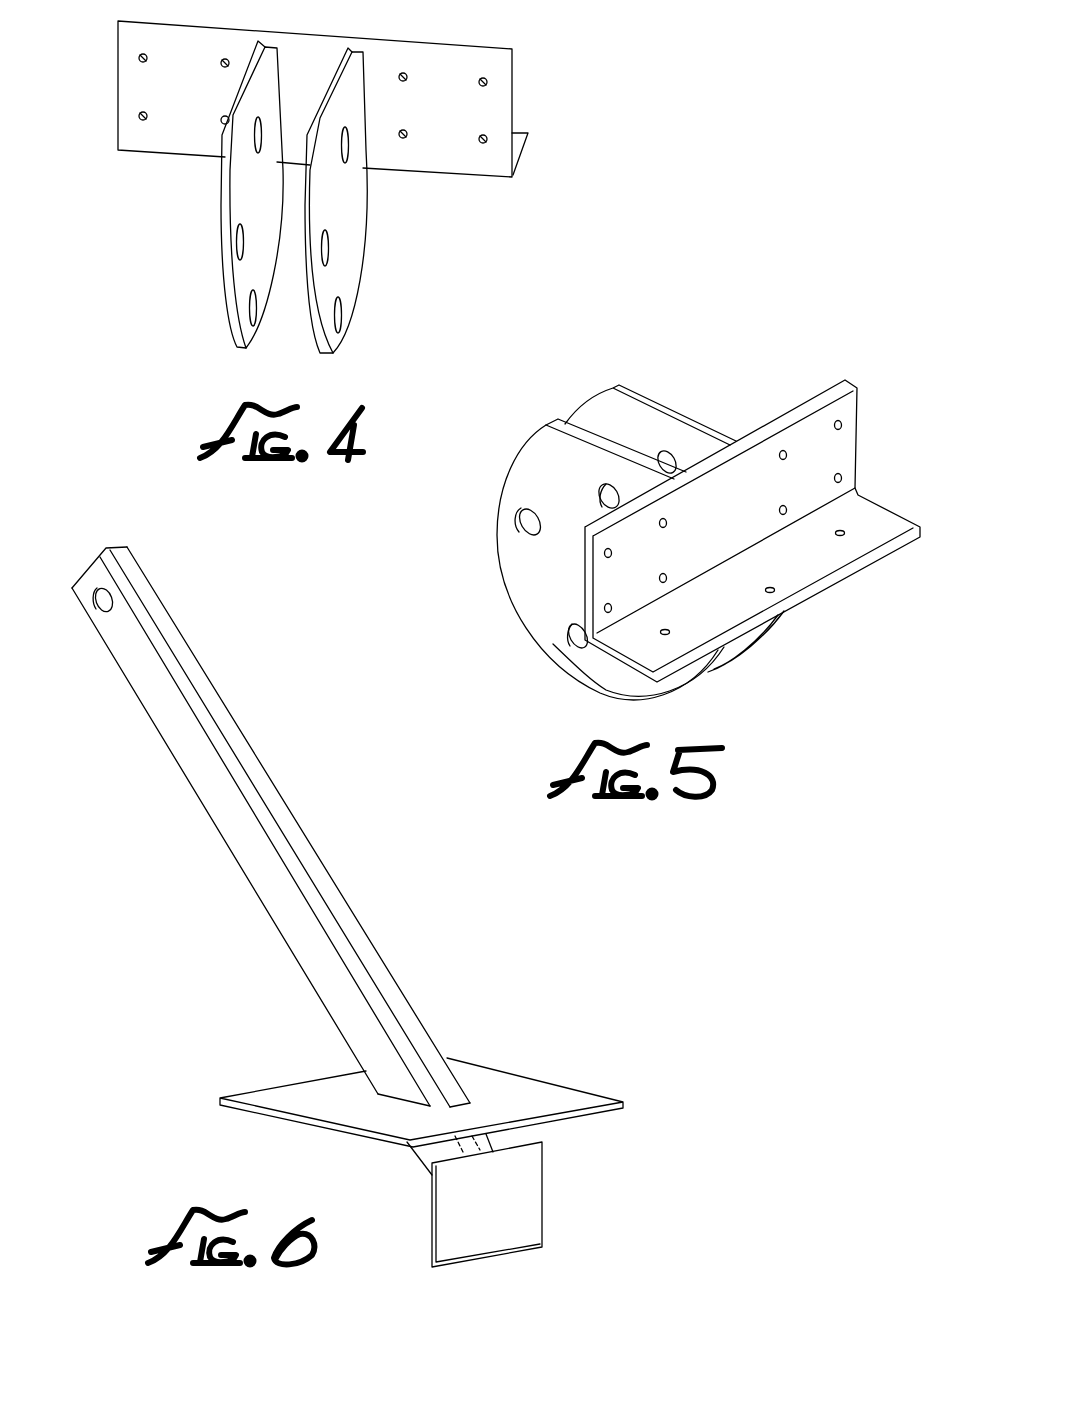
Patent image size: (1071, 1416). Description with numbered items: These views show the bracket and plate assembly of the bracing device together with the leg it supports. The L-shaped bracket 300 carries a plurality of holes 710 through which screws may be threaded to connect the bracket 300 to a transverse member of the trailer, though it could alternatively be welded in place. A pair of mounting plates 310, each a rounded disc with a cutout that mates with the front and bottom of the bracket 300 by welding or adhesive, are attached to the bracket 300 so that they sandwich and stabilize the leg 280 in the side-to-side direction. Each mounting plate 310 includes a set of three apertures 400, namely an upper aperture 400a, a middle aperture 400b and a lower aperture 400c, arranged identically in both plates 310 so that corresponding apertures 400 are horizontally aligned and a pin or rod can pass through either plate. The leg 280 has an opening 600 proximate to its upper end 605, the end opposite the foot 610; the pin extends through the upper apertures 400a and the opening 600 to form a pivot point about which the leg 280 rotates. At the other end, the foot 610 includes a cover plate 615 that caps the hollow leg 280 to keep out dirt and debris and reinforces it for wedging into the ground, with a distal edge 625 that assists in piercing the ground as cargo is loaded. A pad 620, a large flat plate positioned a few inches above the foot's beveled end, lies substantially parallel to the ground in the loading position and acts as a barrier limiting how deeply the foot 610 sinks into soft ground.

In FIG. 4, the bracket 300 is at (327, 74).
In FIG. 5, the bracket 300 is at (740, 520).
In FIG. 4, the mounting plate 310 is at (277, 209).
In FIG. 5, the mounting plate 310 is at (570, 481).
In FIG. 5, the apertures 400 is at (503, 497).
In FIG. 4, the upper aperture 400a is at (255, 135).
In FIG. 5, the upper aperture 400a is at (673, 456).
In FIG. 4, the middle aperture 400b is at (238, 240).
In FIG. 5, the middle aperture 400b is at (515, 531).
In FIG. 4, the lower aperture 400c is at (250, 308).
In FIG. 5, the lower aperture 400c is at (573, 634).
In FIG. 4, the holes 710 is at (489, 83).
In FIG. 5, the holes 710 is at (842, 426).
In FIG. 6, the upper end 605 is at (78, 554).
In FIG. 6, the opening 600 is at (98, 608).
In FIG. 6, the leg 280 is at (248, 857).
In FIG. 6, the foot 610 is at (572, 955).
In FIG. 6, the pad 620 is at (524, 1107).
In FIG. 6, the cover plate 615 is at (505, 1214).
In FIG. 6, the distal edge 625 is at (497, 1254).